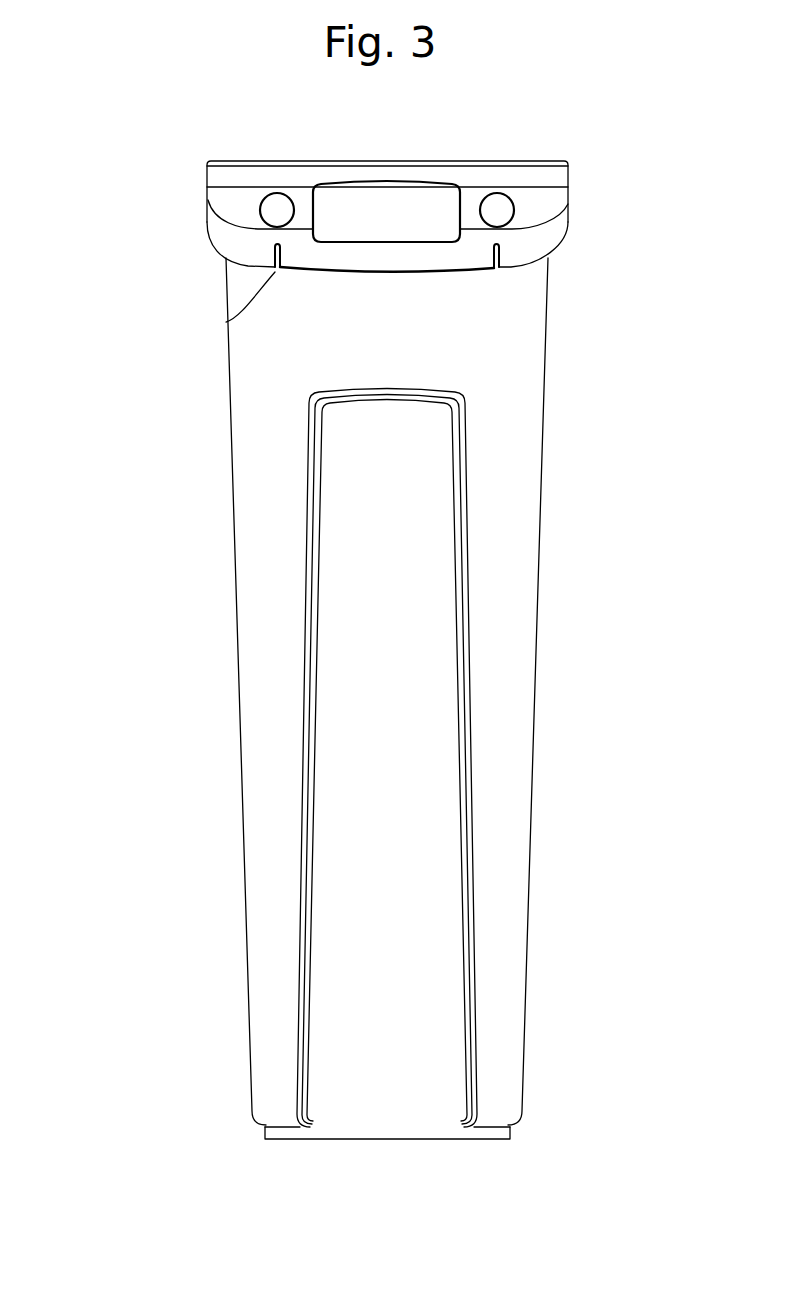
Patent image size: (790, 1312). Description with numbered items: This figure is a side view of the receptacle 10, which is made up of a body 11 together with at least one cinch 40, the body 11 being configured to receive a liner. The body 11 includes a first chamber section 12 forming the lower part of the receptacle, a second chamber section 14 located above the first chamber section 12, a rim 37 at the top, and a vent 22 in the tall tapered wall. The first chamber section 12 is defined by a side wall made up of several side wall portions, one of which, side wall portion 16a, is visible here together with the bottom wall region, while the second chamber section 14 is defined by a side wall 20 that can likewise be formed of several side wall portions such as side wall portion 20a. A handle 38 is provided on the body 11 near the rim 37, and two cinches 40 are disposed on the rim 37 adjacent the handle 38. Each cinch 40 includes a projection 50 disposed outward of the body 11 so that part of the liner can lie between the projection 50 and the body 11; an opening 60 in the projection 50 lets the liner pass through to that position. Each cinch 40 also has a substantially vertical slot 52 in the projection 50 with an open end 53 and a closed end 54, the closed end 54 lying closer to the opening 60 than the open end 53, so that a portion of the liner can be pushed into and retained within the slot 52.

The receptacle 10 is at (603, 134).
The body 11 is at (520, 500).
The first chamber section 12 is at (170, 879).
The second chamber section 14 is at (140, 365).
The side wall portion 16a is at (387, 1113).
The side wall 20 is at (532, 312).
The side wall portion 20a is at (532, 368).
The vent 22 is at (480, 903).
The rim 37 is at (557, 174).
The handle 38 is at (390, 253).
The cinch 40 is at (280, 297).
The projection 50 is at (278, 233).
The slot 52 is at (262, 267).
The open end 53 is at (226, 322).
The closed end 54 is at (275, 247).
The opening 60 is at (278, 208).